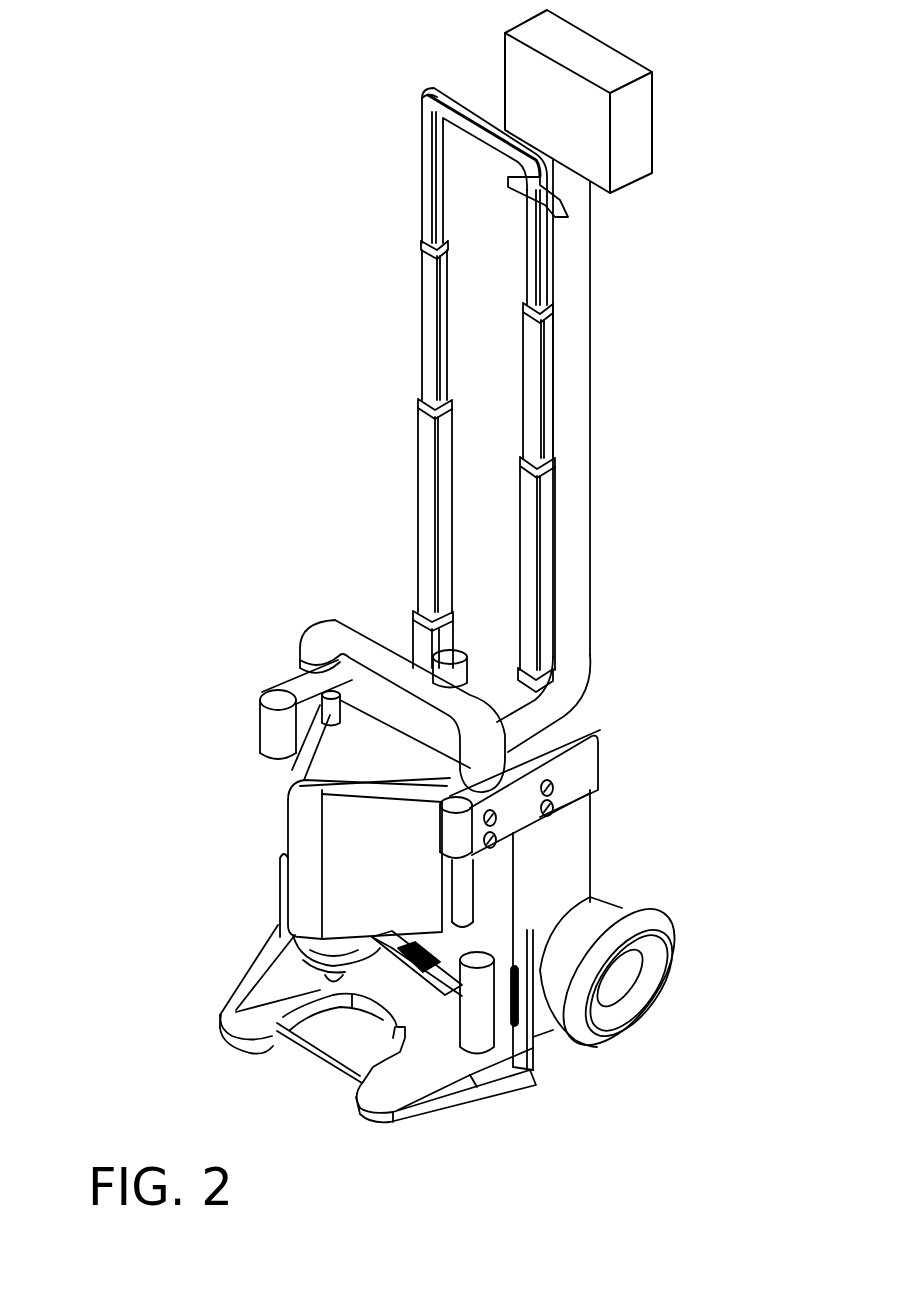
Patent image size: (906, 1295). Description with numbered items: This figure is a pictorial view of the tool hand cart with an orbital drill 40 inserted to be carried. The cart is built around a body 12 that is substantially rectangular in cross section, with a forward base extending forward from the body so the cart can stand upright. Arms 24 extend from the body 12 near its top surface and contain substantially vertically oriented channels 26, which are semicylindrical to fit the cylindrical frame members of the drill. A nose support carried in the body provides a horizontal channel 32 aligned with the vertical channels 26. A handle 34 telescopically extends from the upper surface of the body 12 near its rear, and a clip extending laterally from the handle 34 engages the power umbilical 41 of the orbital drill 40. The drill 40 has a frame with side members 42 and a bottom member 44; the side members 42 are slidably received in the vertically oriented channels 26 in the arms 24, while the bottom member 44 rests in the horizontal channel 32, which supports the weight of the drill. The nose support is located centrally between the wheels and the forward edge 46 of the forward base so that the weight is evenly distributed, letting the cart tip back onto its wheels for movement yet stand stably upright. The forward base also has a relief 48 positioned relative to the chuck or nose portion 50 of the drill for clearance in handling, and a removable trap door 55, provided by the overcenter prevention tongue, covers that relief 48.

The body 12 is at (553, 860).
The arms 24 is at (277, 695).
The vertically oriented channels 26 is at (400, 622).
The horizontal channel 32 is at (518, 918).
The handle 34 is at (422, 315).
The orbital drill 40 is at (305, 850).
The power umbilical 41 is at (577, 392).
The side members 42 is at (515, 778).
The bottom member 44 is at (323, 977).
The forward edge 46 is at (227, 1035).
The relief 48 is at (357, 1003).
The chuck or nose portion 50 is at (330, 958).
The trap door 55 is at (340, 1067).